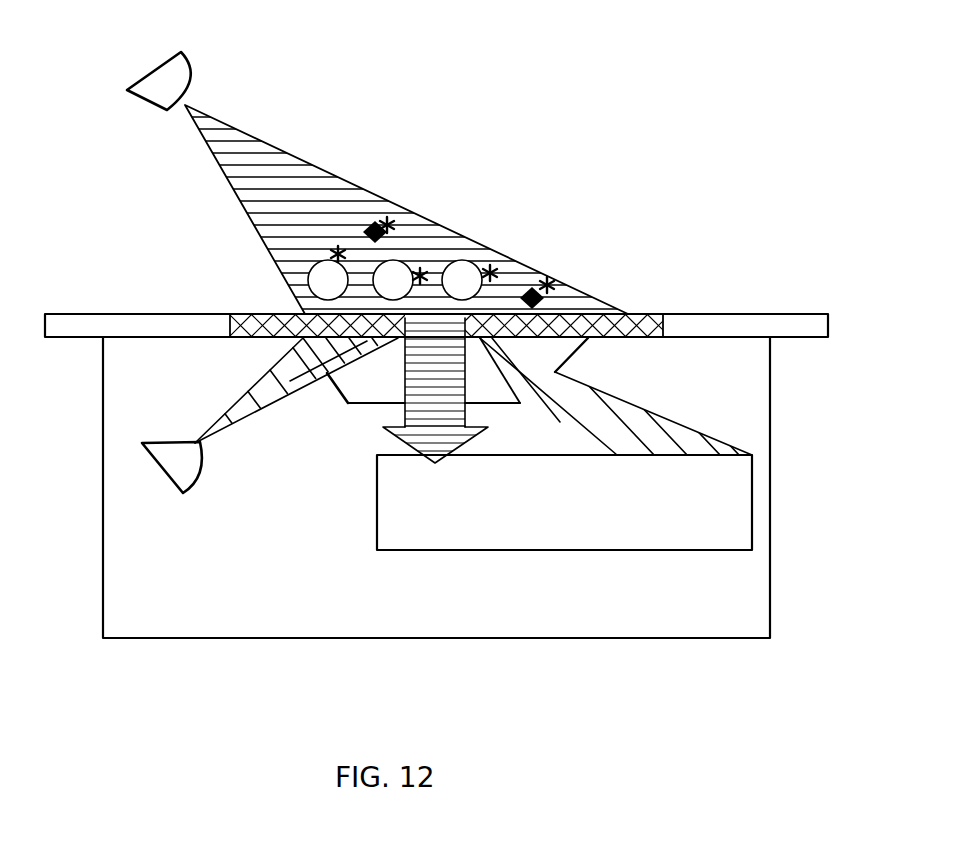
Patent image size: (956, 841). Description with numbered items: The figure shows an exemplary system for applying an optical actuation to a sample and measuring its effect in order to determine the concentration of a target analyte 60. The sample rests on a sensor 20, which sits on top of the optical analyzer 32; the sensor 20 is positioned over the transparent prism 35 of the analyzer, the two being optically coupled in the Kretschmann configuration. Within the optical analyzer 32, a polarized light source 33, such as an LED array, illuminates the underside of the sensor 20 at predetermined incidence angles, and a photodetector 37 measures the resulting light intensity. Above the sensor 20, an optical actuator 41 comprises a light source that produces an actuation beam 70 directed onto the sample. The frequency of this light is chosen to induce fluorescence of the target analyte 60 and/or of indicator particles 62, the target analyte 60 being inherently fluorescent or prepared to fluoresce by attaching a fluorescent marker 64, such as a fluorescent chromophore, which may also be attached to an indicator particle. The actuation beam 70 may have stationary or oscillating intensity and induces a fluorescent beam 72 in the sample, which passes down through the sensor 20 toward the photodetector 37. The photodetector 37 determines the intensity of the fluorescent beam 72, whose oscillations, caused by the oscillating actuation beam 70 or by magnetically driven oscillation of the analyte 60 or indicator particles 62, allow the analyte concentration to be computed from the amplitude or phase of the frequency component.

The sensor 20 is at (828, 314).
The optical analyzer 32 is at (770, 638).
The polarized light source 33 is at (142, 443).
The transparent prism 35 is at (348, 403).
The photodetector 37 is at (377, 550).
The optical actuator 41 is at (127, 90).
The target analyte 60 is at (308, 262).
The indicator particles 62 is at (378, 224).
The fluorescent marker 64 is at (423, 268).
The actuation beam 70 is at (341, 175).
The fluorescent beam 72 is at (392, 428).